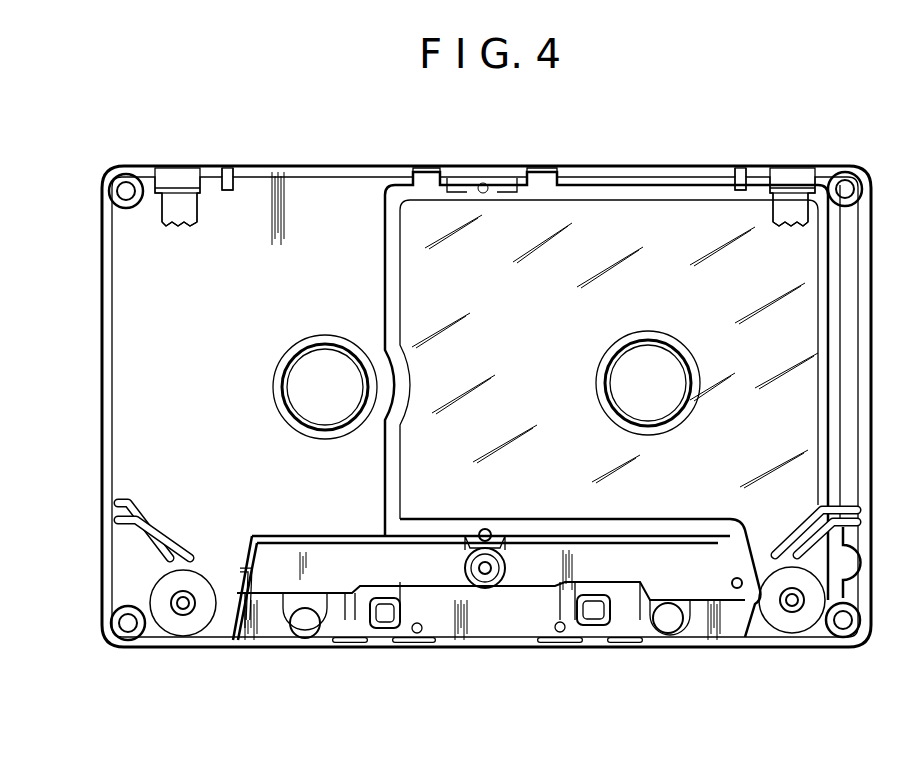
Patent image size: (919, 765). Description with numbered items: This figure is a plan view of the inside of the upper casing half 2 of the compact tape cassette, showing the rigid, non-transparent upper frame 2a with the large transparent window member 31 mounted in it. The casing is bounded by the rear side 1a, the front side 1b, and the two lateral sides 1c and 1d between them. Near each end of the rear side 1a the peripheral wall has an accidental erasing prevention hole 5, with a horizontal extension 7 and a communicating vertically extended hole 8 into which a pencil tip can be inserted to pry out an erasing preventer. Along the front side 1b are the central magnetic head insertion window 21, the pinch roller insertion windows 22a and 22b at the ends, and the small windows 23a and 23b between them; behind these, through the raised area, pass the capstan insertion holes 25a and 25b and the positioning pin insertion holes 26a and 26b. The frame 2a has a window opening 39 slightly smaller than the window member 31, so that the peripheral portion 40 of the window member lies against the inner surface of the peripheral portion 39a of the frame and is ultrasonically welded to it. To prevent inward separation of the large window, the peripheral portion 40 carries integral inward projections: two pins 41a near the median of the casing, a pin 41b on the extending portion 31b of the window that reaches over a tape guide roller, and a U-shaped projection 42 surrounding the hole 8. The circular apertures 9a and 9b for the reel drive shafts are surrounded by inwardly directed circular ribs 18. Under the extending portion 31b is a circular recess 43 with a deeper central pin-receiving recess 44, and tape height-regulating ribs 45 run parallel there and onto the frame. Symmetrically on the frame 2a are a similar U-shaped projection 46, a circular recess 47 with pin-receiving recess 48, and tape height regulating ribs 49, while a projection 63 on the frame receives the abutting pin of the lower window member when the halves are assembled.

The rear side 1a is at (380, 170).
The front side 1b is at (448, 648).
The side 1c is at (871, 436).
The side 1d is at (102, 400).
The upper casing half 2 is at (350, 150).
The upper frame 2a is at (310, 195).
The accidental erasing prevention hole 5 is at (170, 185).
The horizontal extension 7 is at (228, 185).
The vertically extended hole 8 is at (165, 222).
The U-shaped projection 46 is at (185, 226).
The U-shaped projection 42 is at (785, 226).
The pin 41a is at (483, 182).
The peripheral portion 40 is at (588, 190).
The peripheral portion of frame 39a is at (658, 195).
The window opening 39 is at (400, 248).
The upper window member 31 is at (812, 290).
The circular rib 18 is at (300, 345).
The circular aperture 9a is at (290, 372).
The circular aperture 9b is at (612, 368).
The magnetic tape height regulating rib 49 is at (172, 548).
The projection 63 is at (240, 575).
The magnetic tape height-regulating rib 45 is at (812, 545).
The pin 41b is at (730, 583).
The extending portion 31b is at (843, 560).
The circular recess 43 is at (810, 585).
The pin-receiving recess 44 is at (792, 606).
The circular recess 47 is at (170, 615).
The pin-receiving recess 48 is at (183, 608).
The pinch roller insertion window 22a is at (240, 640).
The pinch roller insertion window 22b is at (745, 640).
The capstan insertion hole 25a is at (303, 630).
The capstan insertion hole 25b is at (665, 625).
The positioning pin insertion hole 26a is at (380, 625).
The positioning pin insertion hole 26b is at (585, 623).
The magnetic head insertion window 21 is at (488, 610).
The small window 23a is at (390, 648).
The small window 23b is at (575, 648).